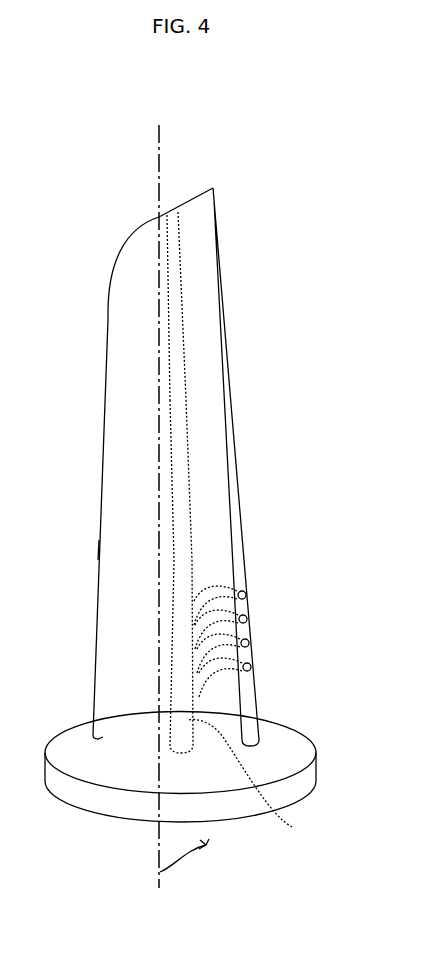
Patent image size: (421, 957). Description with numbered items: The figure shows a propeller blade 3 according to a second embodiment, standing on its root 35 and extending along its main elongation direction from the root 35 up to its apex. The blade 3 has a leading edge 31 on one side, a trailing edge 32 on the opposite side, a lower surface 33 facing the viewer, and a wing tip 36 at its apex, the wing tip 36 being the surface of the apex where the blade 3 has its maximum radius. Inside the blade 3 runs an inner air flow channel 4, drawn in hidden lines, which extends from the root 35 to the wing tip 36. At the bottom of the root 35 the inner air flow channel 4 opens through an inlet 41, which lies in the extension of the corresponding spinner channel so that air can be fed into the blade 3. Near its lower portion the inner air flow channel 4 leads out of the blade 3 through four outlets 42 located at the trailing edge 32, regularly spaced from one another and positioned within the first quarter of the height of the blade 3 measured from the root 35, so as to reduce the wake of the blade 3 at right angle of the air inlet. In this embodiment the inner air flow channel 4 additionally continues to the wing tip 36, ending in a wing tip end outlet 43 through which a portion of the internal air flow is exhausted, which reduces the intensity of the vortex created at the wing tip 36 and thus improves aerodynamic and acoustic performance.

The blade 3 is at (169, 448).
The leading edge 31 is at (108, 370).
The trailing edge 32 is at (240, 507).
The lower surface 33 is at (120, 543).
The root 35 is at (278, 750).
The wing tip 36 is at (190, 198).
The inner air flow channel 4 is at (171, 648).
The inlet 41 is at (251, 776).
The outlets 42 is at (248, 615).
The wing tip end outlet 43 is at (180, 298).